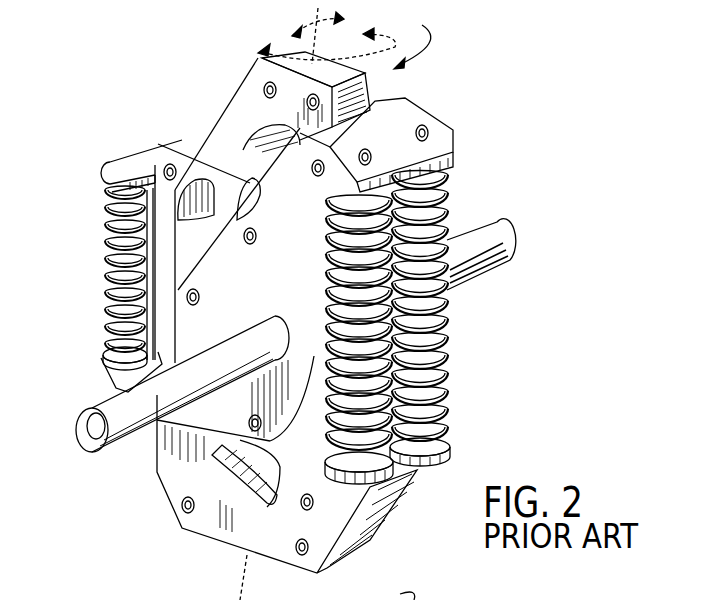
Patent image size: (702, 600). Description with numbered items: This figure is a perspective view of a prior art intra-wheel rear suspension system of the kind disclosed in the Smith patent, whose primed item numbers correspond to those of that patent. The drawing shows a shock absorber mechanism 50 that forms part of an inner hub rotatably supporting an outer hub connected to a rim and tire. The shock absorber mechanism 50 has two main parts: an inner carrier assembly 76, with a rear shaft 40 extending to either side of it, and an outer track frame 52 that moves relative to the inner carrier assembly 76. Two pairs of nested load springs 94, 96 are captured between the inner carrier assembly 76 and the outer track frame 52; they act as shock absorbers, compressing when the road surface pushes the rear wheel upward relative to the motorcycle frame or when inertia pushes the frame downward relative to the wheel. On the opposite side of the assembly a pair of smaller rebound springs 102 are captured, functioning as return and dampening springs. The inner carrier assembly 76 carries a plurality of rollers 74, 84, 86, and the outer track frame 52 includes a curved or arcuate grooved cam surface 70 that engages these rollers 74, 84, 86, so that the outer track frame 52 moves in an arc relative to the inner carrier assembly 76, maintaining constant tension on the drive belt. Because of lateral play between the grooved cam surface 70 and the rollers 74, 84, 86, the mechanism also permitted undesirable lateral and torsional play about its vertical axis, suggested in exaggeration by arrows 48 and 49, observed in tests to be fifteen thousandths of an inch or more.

The rear shaft 40 is at (100, 398).
The arrow 48 is at (304, 36).
The arrow 49 is at (314, 44).
The shock absorber mechanism 50 is at (399, 309).
The outer track frame 52 is at (377, 100).
The grooved cam surface 70 is at (175, 218).
The roller 74 is at (183, 267).
The inner carrier assembly 76 is at (287, 183).
The roller 84 is at (297, 140).
The roller 86 is at (280, 508).
The load spring 94 is at (447, 313).
The load spring 96 is at (447, 345).
The rebound spring 102 is at (105, 252).